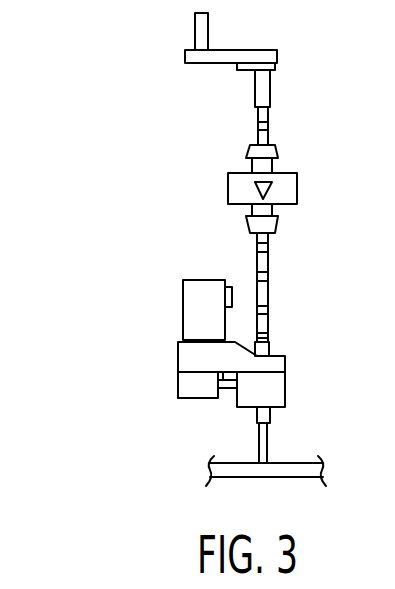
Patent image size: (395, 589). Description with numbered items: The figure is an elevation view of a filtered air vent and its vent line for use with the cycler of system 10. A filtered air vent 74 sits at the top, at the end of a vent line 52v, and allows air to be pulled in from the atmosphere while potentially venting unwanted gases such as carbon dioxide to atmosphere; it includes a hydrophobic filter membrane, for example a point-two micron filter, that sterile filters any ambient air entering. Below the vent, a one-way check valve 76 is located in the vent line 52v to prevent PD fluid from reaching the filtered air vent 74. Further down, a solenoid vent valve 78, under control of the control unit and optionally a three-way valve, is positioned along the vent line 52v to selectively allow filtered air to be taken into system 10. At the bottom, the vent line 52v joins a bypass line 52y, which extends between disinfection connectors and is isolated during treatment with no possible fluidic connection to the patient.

The system 10 is at (80, 92).
The filtered air vent 74 is at (277, 57).
The check valve 76 is at (297, 187).
The vent line 52v is at (268, 292).
The solenoid vent valve 78 is at (178, 360).
The bypass line 52y is at (313, 463).